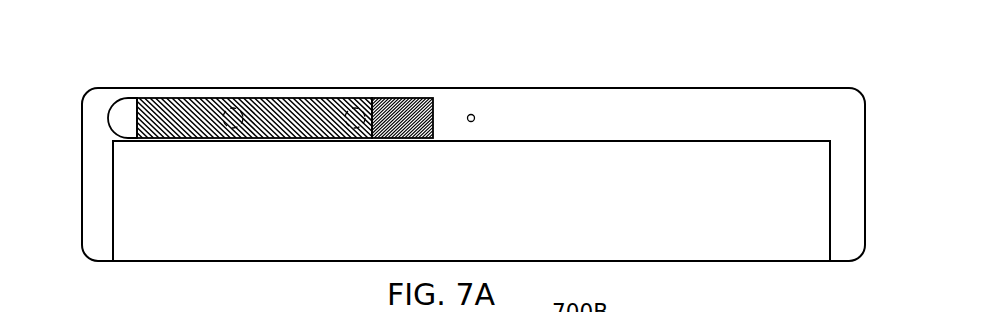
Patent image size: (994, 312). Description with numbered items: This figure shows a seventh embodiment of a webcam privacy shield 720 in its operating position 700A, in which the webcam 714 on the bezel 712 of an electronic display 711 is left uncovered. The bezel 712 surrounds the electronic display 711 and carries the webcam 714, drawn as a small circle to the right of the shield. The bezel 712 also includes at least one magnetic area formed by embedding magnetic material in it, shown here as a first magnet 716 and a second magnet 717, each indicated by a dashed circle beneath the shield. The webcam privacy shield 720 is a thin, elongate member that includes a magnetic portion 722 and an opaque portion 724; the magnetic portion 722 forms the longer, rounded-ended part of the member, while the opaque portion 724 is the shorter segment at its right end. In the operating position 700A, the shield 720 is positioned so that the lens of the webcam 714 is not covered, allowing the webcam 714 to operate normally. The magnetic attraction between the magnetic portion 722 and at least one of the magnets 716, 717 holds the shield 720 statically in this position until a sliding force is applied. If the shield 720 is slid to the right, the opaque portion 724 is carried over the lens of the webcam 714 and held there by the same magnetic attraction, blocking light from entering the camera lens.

The operating position 700A is at (454, 132).
The electronic display 711 is at (182, 233).
The bezel 712 is at (82, 105).
The webcam 714 is at (473, 114).
The first magnet 716 is at (238, 98).
The second magnet 717 is at (363, 98).
The webcam privacy shield 720 is at (131, 97).
The magnetic portion 722 is at (289, 107).
The opaque portion 724 is at (418, 107).